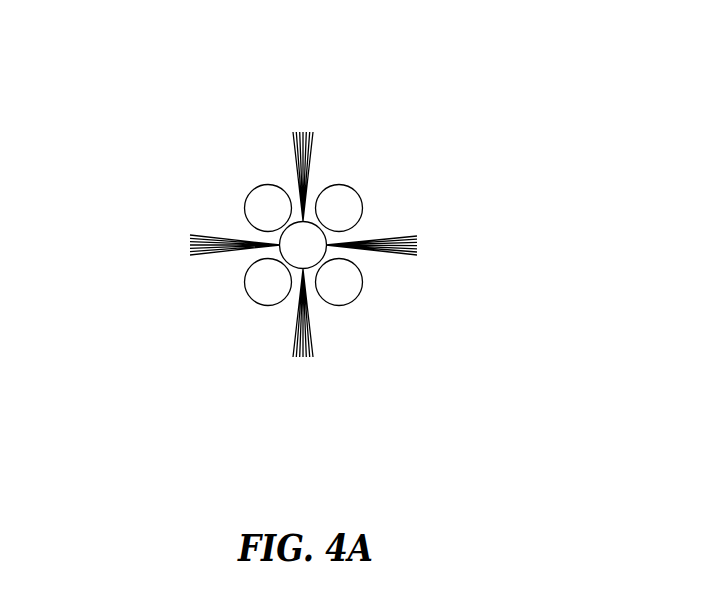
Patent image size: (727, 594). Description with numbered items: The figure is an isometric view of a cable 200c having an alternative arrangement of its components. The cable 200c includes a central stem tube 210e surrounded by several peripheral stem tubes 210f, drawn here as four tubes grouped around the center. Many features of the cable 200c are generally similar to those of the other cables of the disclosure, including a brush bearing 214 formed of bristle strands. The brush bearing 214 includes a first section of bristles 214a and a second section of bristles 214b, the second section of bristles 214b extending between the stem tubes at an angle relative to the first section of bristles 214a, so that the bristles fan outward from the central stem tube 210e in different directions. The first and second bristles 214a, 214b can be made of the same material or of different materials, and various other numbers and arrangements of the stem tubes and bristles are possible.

The cable 200c is at (438, 53).
The central stem tube 210e is at (295, 253).
The peripheral stem tubes 210f is at (330, 205).
The brush bearing 214 is at (405, 236).
The first section of bristles 214a is at (207, 235).
The second section of bristles 214b is at (312, 155).